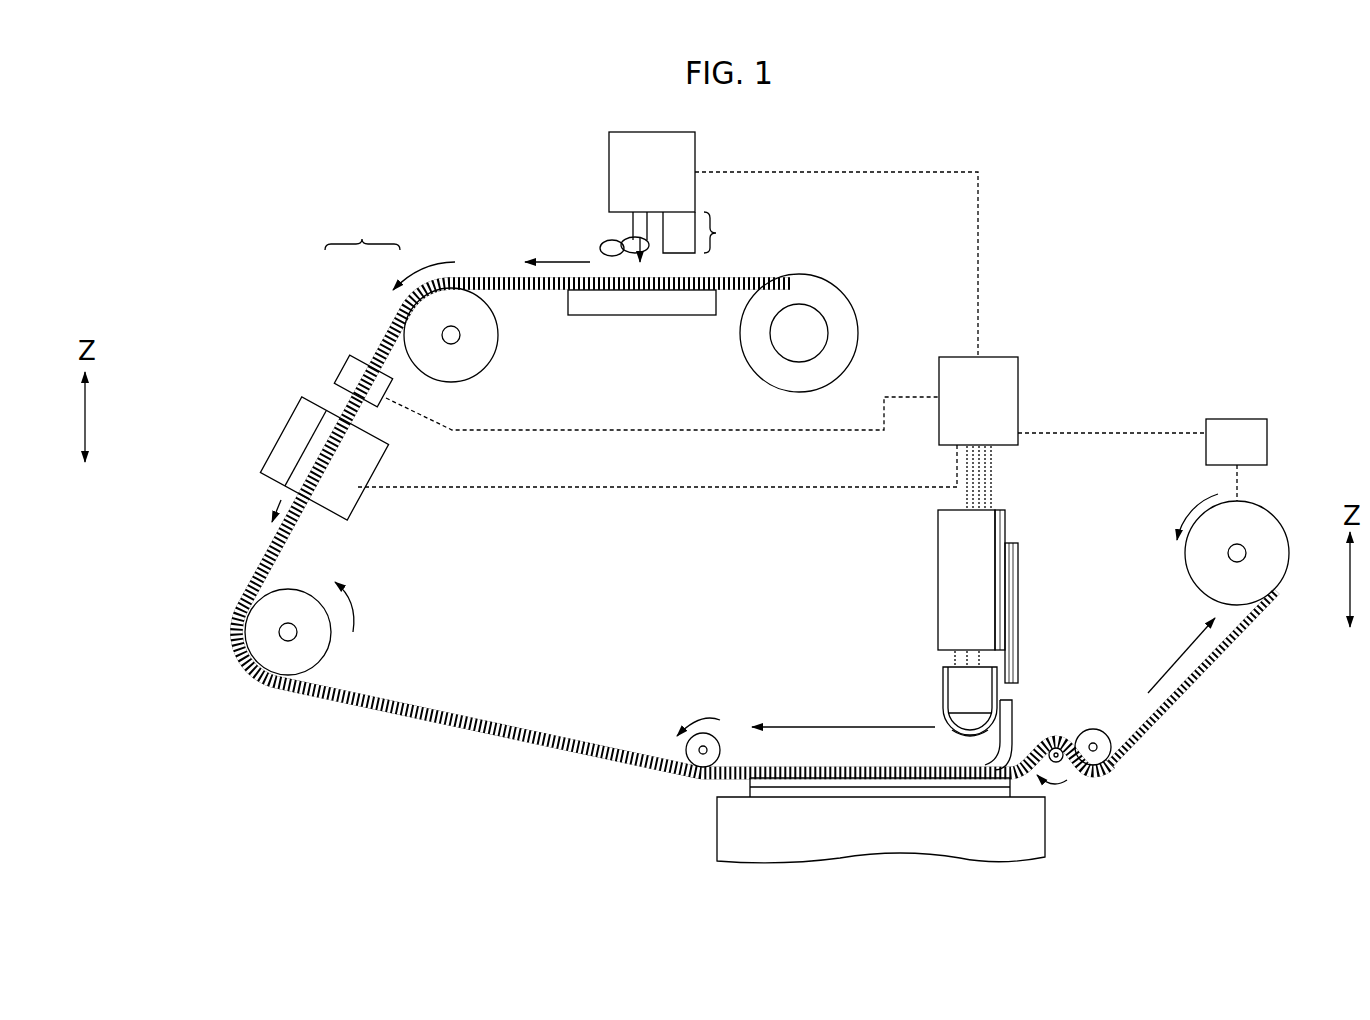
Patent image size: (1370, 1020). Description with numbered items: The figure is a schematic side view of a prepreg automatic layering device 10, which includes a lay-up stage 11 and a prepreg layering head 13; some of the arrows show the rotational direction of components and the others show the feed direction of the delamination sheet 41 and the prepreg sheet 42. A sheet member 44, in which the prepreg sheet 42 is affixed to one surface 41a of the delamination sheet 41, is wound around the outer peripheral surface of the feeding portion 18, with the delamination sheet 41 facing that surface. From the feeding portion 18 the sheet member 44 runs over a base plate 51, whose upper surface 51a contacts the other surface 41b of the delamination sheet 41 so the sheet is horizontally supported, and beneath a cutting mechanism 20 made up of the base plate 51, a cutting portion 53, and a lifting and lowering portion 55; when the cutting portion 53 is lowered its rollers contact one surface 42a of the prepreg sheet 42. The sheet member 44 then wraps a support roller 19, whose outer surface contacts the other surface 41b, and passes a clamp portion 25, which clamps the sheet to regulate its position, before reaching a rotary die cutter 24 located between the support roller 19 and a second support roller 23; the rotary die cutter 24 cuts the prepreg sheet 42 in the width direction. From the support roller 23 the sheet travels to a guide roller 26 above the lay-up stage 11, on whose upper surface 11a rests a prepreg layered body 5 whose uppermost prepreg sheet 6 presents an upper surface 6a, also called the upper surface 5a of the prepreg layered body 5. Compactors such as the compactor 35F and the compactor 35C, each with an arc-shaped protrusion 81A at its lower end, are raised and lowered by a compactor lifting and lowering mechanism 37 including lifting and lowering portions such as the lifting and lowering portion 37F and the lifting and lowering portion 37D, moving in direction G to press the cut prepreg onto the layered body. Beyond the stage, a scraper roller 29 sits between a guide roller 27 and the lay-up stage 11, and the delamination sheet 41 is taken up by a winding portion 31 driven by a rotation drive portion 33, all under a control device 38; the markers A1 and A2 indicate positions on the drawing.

The prepreg automatic layering device 10 is at (225, 159).
The cutting mechanism 20 is at (654, 180).
The lifting and lowering portion 55 is at (684, 143).
The cutting portion 53 is at (717, 234).
The one surface of the prepreg sheet 42a is at (724, 277).
The feeding portion 18 is at (830, 307).
The control device 38 is at (947, 358).
The sheet member 44 is at (362, 229).
The prepreg sheet 42 is at (380, 322).
The delamination sheet 41 is at (396, 328).
The one surface of the delamination sheet 41a is at (373, 330).
The other surface of the delamination sheet 41b is at (694, 292).
The clamp portion 25 is at (340, 370).
The rotary die cutter 24 is at (300, 420).
The support roller 19 is at (482, 350).
The base plate 51 is at (651, 306).
The upper surface of the base plate 51a is at (583, 297).
The prepreg layering head 13 is at (195, 430).
The support roller 23 is at (276, 655).
The rotation drive portion 33 is at (1242, 418).
The winding portion 31 is at (1258, 520).
The compactor lifting and lowering mechanism 37 is at (1023, 578).
The lifting and lowering portion 37F is at (966, 562).
The lifting and lowering portion 37D is at (1010, 660).
The compactor 35F is at (957, 688).
The compactor 35C is at (1010, 718).
The protrusion 81A is at (982, 760).
The guide roller 26 is at (698, 770).
The prepreg layered body 5 is at (745, 796).
The upper surface of the prepreg layered body 5a is at (808, 926).
The prepreg sheet 6 is at (868, 784).
The upper surface of the prepreg sheet 6a is at (841, 768).
The lay-up stage 11 is at (955, 850).
The upper surface of the lay-up stage 11a is at (940, 797).
The scraper roller 29 is at (1062, 762).
The guide roller 27 is at (1112, 742).
The compactor movement direction G is at (832, 727).
The section line A1 is at (1004, 317).
The section line A2 is at (1006, 895).